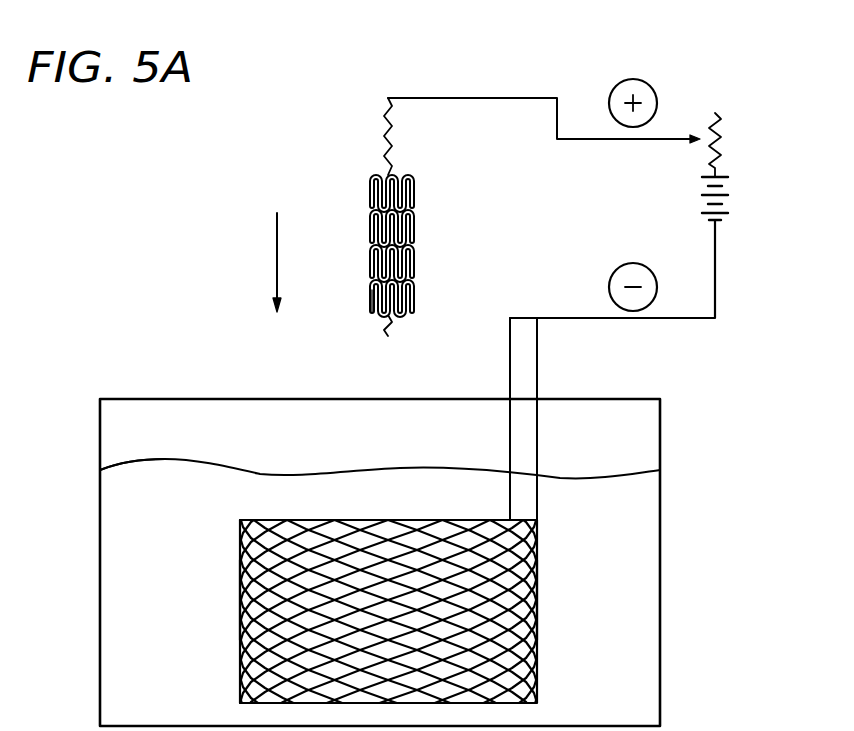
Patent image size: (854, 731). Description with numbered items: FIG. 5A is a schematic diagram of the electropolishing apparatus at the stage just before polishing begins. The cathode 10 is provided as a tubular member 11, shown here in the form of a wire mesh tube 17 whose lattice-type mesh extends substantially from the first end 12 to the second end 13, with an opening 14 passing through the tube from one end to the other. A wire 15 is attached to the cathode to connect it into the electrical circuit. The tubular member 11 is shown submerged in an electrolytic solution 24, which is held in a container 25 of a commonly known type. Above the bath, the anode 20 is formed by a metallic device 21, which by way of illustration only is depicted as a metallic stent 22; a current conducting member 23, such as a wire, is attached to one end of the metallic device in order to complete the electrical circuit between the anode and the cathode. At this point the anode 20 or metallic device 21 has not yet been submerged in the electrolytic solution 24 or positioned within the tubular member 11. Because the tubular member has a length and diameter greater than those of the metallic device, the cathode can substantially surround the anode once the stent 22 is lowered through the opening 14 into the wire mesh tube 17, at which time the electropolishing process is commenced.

The cathode 10 is at (268, 465).
The tubular member 11 is at (240, 598).
The first end 12 is at (248, 520).
The second end 13 is at (262, 703).
The opening 14 is at (365, 518).
The wire 15 is at (663, 318).
The wire mesh tube 17 is at (540, 602).
The anode 20 is at (377, 170).
The metallic device 21 is at (448, 219).
The metallic stent 22 is at (415, 292).
The current conducting member 23 is at (474, 98).
The electrolytic solution 24 is at (145, 462).
The container 25 is at (100, 562).